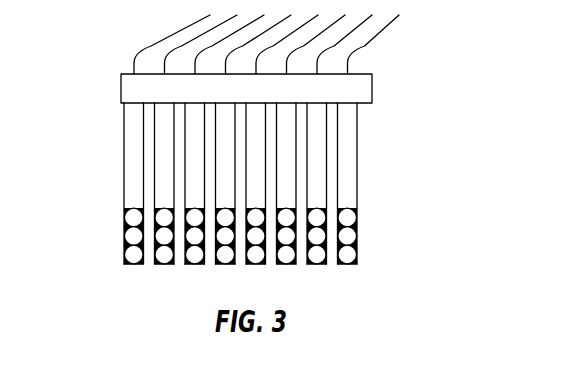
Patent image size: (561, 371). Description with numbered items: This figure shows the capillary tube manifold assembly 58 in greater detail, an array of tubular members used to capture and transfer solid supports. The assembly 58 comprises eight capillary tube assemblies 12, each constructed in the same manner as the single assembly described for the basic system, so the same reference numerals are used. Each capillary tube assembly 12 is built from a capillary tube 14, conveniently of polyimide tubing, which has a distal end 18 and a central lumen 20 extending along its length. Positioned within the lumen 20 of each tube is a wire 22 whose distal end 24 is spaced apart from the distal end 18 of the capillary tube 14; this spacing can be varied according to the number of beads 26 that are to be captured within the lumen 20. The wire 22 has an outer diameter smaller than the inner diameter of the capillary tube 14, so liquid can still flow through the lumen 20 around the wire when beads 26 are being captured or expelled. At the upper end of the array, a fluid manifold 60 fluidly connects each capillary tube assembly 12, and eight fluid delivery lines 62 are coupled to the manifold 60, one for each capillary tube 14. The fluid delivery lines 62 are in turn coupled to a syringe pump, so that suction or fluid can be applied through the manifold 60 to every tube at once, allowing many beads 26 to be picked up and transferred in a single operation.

The capillary tube manifold assembly 58 is at (243, 161).
The fluid manifold 60 is at (368, 74).
The fluid delivery lines 62 is at (183, 52).
The capillary tube assembly 12 is at (153, 125).
The capillary tube 14 is at (153, 152).
The central lumen 20 is at (181, 250).
The wire 22 is at (128, 172).
The distal end of wire 24 is at (126, 208).
The beads 26 is at (352, 236).
The distal end of capillary tube 18 is at (143, 264).